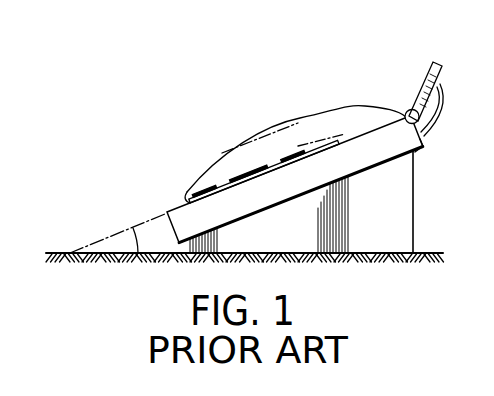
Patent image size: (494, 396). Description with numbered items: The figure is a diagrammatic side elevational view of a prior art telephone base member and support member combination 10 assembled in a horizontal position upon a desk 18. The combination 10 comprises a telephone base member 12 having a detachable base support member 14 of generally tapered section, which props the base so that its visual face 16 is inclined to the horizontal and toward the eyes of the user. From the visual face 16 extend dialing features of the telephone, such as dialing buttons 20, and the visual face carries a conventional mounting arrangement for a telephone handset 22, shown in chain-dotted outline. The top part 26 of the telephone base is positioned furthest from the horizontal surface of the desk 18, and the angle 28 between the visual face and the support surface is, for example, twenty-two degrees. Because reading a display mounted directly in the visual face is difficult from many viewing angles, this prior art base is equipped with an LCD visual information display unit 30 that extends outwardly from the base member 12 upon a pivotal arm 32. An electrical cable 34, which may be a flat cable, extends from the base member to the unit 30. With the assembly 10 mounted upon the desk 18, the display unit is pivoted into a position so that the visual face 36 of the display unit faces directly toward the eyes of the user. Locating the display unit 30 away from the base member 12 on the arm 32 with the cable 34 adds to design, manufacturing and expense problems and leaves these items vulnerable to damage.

The telephone base member and support member combination 10 is at (270, 165).
The telephone base member 12 is at (262, 190).
The base support member 14 is at (414, 232).
The visual face 16 is at (323, 133).
The desk 18 is at (55, 252).
The dialing buttons 20 is at (188, 190).
The telephone handset 22 is at (262, 125).
The top part of the telephone base 26 is at (425, 147).
The angle between the visual face and the support surface 28 is at (117, 240).
The LCD visual information display unit 30 is at (433, 61).
The pivotal arm 32 is at (404, 112).
The electrical cable 34 is at (449, 99).
The visual face of the display unit 36 is at (413, 79).